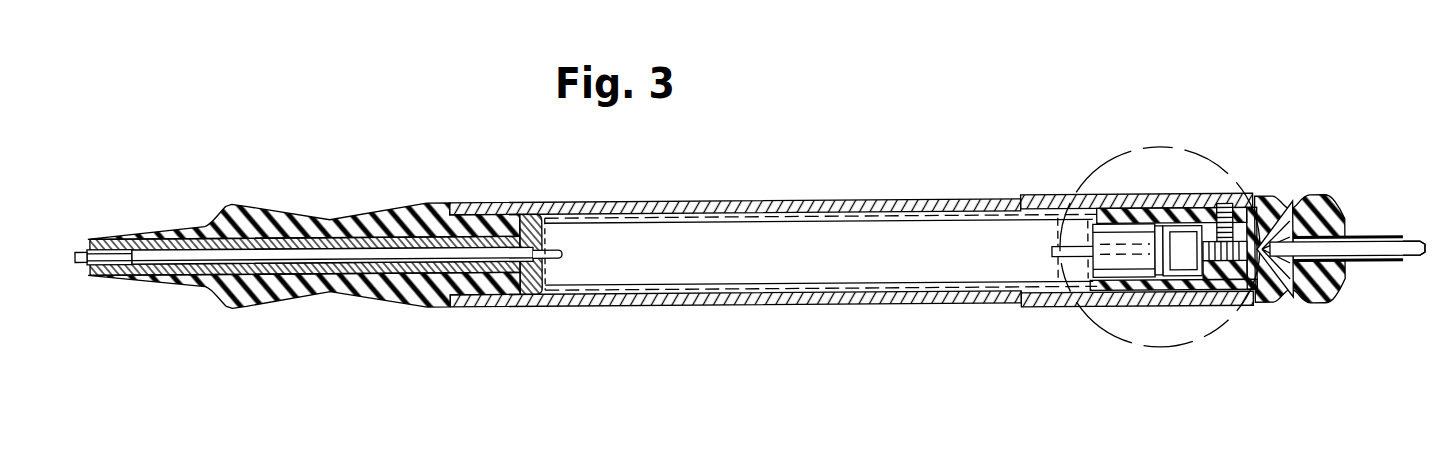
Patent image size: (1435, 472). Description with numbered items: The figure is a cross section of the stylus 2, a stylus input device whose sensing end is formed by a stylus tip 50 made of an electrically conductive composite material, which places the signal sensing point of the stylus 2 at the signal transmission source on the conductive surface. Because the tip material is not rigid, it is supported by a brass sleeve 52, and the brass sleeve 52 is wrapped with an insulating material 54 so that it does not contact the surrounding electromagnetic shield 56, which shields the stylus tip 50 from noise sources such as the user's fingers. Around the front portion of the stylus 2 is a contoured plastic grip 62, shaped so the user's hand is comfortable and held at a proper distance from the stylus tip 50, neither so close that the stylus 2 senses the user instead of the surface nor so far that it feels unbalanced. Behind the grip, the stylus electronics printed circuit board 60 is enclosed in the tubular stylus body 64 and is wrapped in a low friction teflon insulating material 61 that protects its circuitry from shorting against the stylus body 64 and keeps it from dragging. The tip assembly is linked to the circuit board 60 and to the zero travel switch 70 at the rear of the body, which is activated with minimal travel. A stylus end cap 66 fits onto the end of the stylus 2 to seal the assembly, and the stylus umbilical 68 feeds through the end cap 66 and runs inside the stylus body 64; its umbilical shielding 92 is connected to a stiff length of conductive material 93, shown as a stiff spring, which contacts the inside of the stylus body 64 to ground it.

The stylus 2 is at (766, 66).
The stylus tip 50 is at (78, 218).
The brass sleeve 52 is at (115, 202).
The insulating material 54 is at (304, 205).
The electromagnetic shield 56 is at (523, 225).
The stylus electronics printed circuit board 60 is at (819, 285).
The low friction teflon insulating material 61 is at (820, 209).
The plastic grip 62 is at (303, 212).
The stylus body 64 is at (851, 231).
The stylus end cap 66 is at (1316, 224).
The stylus umbilical 68 is at (1406, 290).
The zero travel switch 70 is at (1156, 222).
The umbilical shielding 92 is at (1347, 182).
The stiff length of conductive material 93 is at (1347, 221).